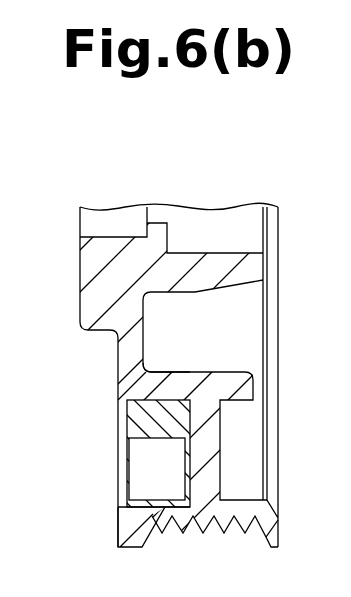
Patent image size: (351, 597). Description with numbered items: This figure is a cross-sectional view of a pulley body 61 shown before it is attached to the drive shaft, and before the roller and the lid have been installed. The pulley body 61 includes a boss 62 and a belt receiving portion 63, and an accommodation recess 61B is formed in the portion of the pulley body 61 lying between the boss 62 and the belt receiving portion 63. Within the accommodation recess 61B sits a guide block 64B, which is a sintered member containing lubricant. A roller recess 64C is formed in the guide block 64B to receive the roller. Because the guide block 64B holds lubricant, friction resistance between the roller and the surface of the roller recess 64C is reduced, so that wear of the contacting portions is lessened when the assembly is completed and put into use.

The pulley body 61 is at (88, 262).
The accommodation recess 61B is at (152, 403).
The boss 62 is at (253, 385).
The belt receiving portion 63 is at (124, 522).
The guide block 64B is at (128, 423).
The roller recess 64C is at (162, 440).